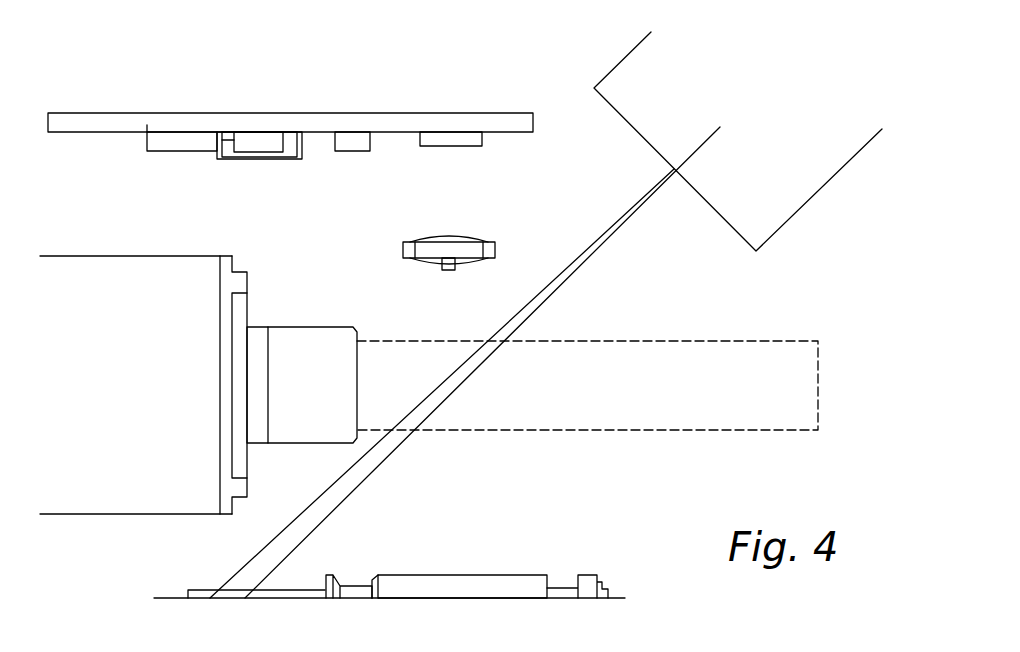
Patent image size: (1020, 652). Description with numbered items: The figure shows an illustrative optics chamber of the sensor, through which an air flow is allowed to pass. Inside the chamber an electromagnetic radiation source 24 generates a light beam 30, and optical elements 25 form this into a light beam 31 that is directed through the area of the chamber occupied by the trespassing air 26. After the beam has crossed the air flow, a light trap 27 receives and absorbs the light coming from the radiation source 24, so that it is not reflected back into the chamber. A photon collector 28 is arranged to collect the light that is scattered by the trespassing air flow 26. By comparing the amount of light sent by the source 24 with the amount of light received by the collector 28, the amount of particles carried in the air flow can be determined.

The electromagnetic radiation source 24 is at (475, 587).
The optical elements 25 is at (200, 595).
The trespassing air 26 is at (630, 397).
The light trap 27 is at (708, 203).
The photon collector 28 is at (451, 140).
The light beam 30 is at (292, 595).
The light beam 31 is at (367, 463).